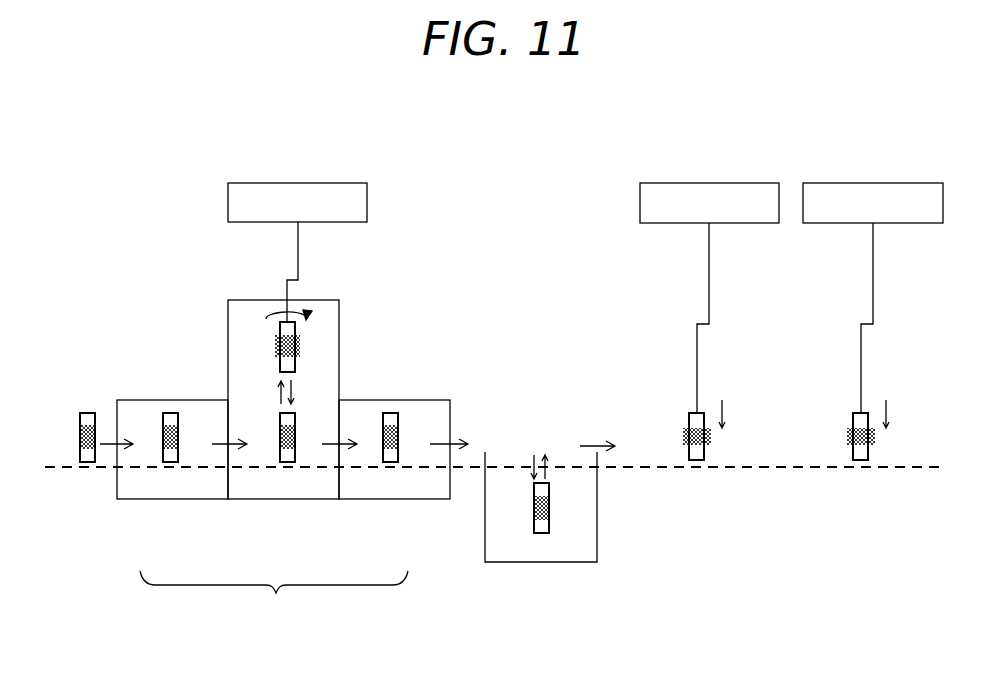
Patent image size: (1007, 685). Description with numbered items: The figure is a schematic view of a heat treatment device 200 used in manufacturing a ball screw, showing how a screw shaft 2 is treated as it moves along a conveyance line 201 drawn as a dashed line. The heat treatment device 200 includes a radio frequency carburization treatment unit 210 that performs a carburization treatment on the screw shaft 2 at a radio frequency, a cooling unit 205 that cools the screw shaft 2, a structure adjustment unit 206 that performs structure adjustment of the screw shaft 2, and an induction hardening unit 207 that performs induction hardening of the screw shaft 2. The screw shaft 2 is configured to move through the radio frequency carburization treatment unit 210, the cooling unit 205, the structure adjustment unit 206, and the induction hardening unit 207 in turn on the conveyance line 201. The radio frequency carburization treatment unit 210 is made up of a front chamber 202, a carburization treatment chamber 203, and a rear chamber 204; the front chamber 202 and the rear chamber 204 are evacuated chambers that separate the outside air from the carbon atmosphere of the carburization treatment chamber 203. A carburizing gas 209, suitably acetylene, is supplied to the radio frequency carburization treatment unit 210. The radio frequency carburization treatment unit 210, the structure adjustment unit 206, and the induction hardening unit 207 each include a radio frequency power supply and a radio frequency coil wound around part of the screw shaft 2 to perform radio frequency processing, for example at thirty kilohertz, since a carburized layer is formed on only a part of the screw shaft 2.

The screw shaft 2 is at (80, 420).
The heat treatment device 200 is at (200, 262).
The conveyance line 201 is at (71, 455).
The front chamber 202 is at (166, 500).
The carburization treatment chamber 203 is at (277, 500).
The rear chamber 204 is at (390, 500).
The cooling unit 205 is at (540, 563).
The structure adjustment unit 206 is at (698, 462).
The induction hardening unit 207 is at (862, 462).
The carburizing gas 209 is at (259, 351).
The radio frequency carburization treatment unit 210 is at (274, 599).